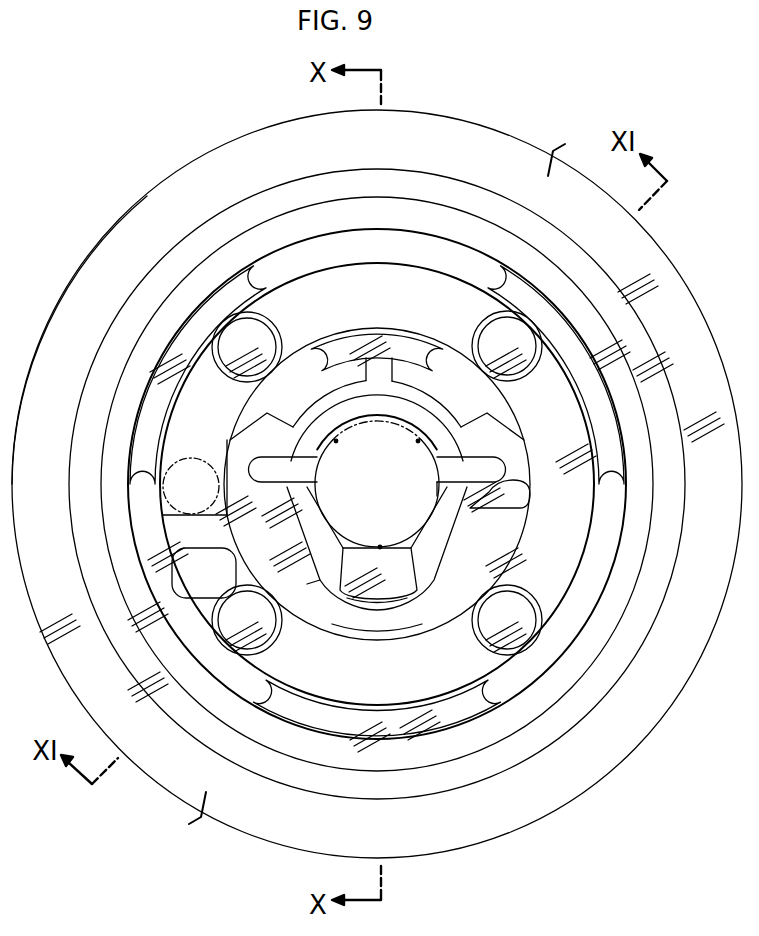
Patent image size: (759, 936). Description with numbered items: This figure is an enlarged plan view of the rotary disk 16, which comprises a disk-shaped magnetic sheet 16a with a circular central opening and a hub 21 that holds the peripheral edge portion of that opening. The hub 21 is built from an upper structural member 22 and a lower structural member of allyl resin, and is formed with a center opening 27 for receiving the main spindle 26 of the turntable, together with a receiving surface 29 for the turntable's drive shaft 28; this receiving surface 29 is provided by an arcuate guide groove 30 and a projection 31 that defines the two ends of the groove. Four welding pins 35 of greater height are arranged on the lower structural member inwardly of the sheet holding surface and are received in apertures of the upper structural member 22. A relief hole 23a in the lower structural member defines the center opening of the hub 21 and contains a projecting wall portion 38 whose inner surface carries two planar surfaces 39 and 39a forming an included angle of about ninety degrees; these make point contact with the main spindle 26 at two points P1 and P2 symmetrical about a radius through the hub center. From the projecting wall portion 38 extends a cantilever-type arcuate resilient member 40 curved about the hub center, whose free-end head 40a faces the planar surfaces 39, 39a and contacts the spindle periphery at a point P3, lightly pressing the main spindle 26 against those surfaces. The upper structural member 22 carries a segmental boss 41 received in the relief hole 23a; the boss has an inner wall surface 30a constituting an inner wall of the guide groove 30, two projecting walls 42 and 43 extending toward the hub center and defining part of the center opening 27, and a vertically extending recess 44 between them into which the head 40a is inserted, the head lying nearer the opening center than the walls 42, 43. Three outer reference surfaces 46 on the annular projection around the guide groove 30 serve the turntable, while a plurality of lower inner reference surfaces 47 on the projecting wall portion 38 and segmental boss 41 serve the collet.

The rotary disk 16 is at (234, 143).
The magnetic sheet 16a is at (114, 238).
The hub 21 is at (66, 465).
The upper structural member 22 is at (634, 330).
The relief hole 23a is at (527, 463).
The main spindle 26 is at (417, 413).
The center opening 27 is at (386, 499).
The drive shaft 28 is at (210, 462).
The receiving surface 29 is at (174, 512).
The arcuate guide groove 30 is at (444, 279).
The inner wall surface 30a is at (407, 643).
The projection 31 is at (230, 552).
The welding pins 35 is at (262, 330).
The projecting wall portion 38 is at (276, 404).
The planar surface 39 is at (322, 468).
The planar surface 39a is at (410, 499).
The arcuate resilient member 40 is at (320, 588).
The head 40a is at (368, 600).
The segmental boss 41 is at (337, 647).
The projecting wall 42 is at (308, 592).
The projecting wall 43 is at (522, 508).
The recess 44 is at (428, 600).
The outer reference surfaces 46 is at (178, 378).
The inner reference surfaces 47 is at (397, 337).
The contact point P1 is at (337, 442).
The contact point P2 is at (416, 446).
The contact point P3 is at (380, 547).